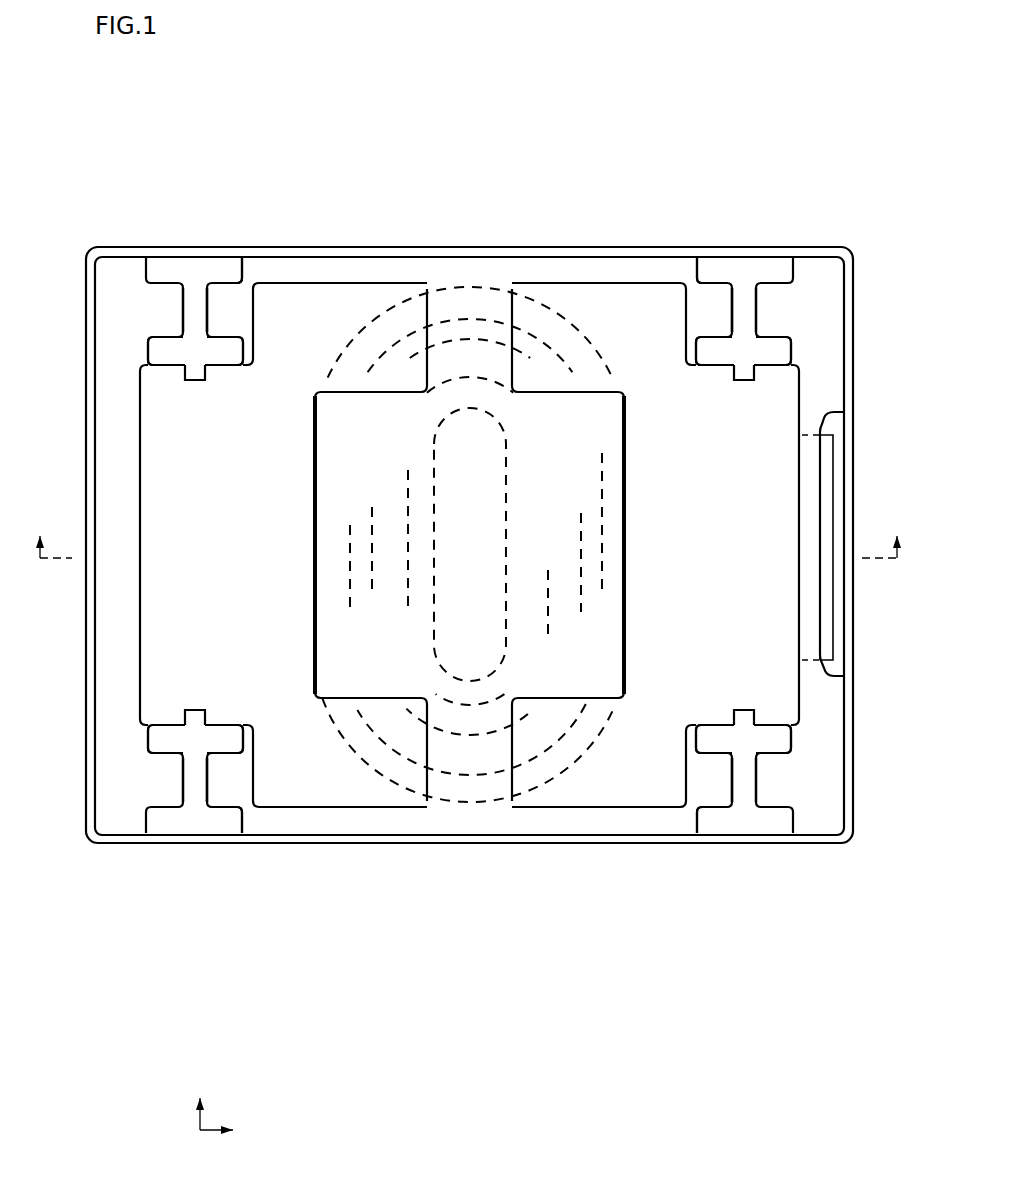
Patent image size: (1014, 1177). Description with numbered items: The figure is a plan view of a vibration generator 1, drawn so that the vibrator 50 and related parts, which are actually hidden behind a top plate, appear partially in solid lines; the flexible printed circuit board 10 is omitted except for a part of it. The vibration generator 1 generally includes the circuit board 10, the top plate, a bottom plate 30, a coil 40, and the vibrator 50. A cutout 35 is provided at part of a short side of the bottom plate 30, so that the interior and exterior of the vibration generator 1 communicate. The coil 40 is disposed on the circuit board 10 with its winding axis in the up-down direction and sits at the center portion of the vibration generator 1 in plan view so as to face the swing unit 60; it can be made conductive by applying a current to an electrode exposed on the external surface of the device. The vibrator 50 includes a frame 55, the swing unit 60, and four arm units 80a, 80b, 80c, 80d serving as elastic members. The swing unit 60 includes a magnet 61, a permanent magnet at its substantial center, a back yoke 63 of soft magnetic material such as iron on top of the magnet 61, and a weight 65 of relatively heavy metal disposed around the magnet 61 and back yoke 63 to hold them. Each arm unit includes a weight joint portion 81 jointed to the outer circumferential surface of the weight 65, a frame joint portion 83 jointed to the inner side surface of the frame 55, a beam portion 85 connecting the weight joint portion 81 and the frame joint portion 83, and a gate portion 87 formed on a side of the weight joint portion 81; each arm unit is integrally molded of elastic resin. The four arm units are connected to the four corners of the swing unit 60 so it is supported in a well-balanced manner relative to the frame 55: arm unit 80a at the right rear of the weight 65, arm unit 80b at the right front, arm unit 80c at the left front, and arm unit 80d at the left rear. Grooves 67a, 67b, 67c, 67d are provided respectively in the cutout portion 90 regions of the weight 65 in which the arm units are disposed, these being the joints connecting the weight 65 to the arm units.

The vibration generator 1 is at (250, 31).
The circuit board 10 is at (810, 613).
The bottom plate 30 is at (100, 543).
The cutout 35 is at (838, 468).
The coil 40 is at (529, 289).
The vibrator 50 is at (427, 237).
The frame 55 is at (478, 252).
The swing unit 60 is at (352, 270).
The magnet 61 is at (469, 622).
The back yoke 63 is at (384, 665).
The weight 65 is at (573, 793).
The groove 67a is at (742, 382).
The groove 67b is at (742, 708).
The groove 67c is at (195, 708).
The groove 67d is at (198, 382).
The arm unit 80a is at (684, 270).
The arm unit 80b is at (685, 822).
The arm unit 80c is at (145, 821).
The arm unit 80d is at (140, 268).
The weight joint portion 81 is at (224, 355).
The frame joint portion 83 is at (230, 268).
The beam portion 85 is at (190, 313).
The gate portion 87 is at (193, 375).
The cutout portion 90 is at (228, 312).